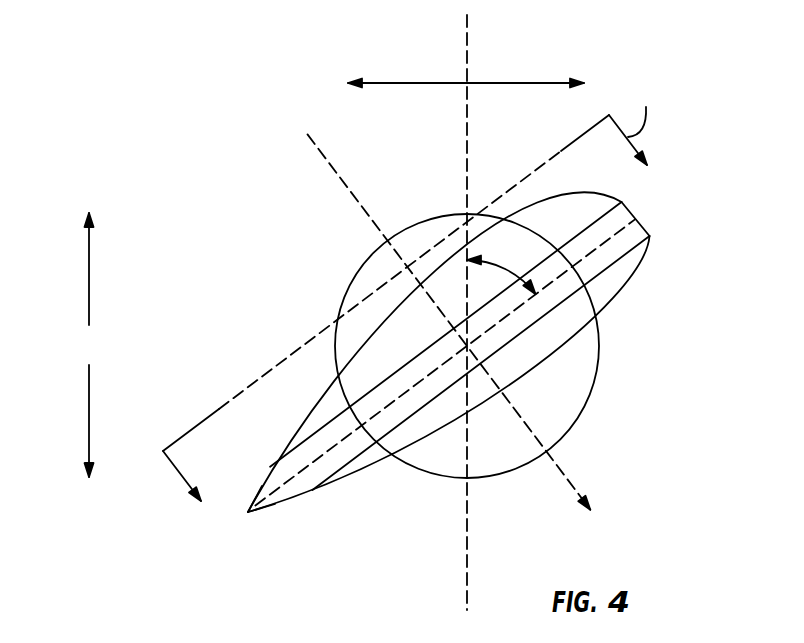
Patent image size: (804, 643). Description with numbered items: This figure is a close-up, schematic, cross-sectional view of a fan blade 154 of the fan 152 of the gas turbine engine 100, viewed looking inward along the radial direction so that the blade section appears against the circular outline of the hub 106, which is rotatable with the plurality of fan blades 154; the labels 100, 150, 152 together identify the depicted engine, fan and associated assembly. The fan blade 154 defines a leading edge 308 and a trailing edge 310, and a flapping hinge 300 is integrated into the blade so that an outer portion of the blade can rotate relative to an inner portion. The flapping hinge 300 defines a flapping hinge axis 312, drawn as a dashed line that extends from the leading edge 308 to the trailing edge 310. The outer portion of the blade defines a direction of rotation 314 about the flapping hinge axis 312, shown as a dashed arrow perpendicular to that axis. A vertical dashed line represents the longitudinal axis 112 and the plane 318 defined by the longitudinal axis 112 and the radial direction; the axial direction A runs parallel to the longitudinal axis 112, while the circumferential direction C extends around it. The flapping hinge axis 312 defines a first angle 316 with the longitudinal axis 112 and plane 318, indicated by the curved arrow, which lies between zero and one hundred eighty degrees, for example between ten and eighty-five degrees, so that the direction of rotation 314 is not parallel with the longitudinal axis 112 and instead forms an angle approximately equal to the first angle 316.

The gas turbine engine 100 is at (168, 123).
The rotor assembly 150 is at (414, 317).
The fan 152 is at (414, 317).
The hub 106 is at (592, 382).
The fan blade 154 is at (618, 292).
The flapping hinge 300 is at (430, 404).
The leading edge 308 is at (655, 215).
The trailing edge 310 is at (247, 515).
The flapping hinge axis 312 is at (435, 371).
The direction of rotation 314 is at (397, 250).
The first angle 316 is at (515, 278).
The longitudinal axis 112 is at (467, 62).
The plane 318 is at (423, 312).
The axial direction A is at (90, 345).
The circumferential direction C is at (534, 83).